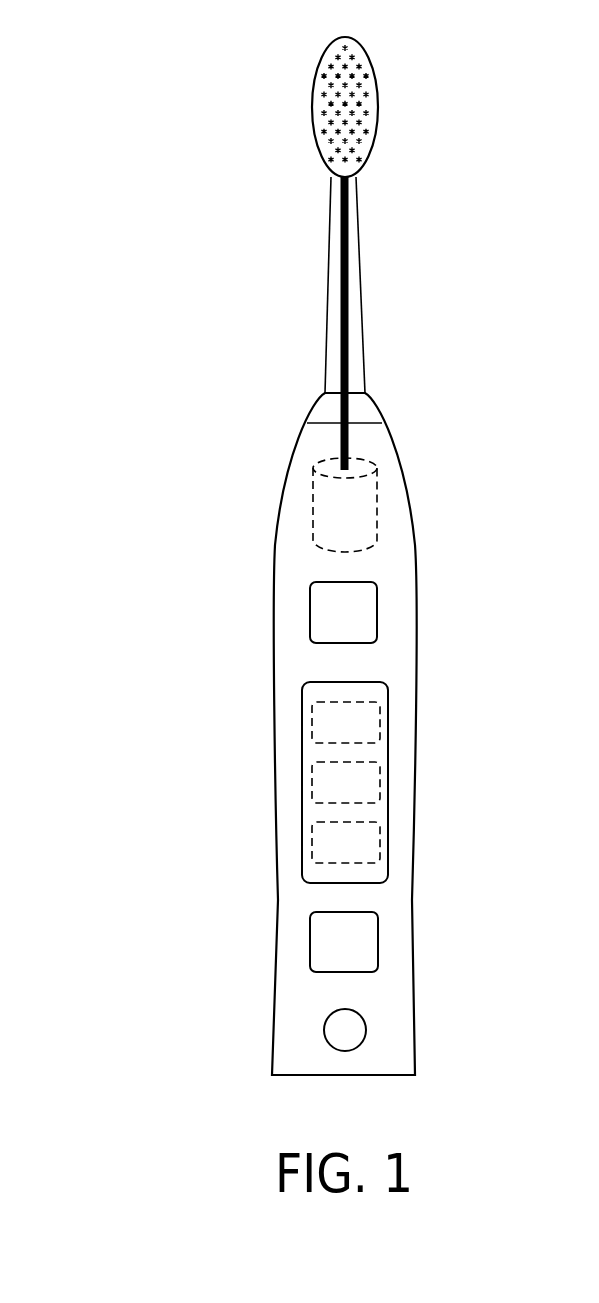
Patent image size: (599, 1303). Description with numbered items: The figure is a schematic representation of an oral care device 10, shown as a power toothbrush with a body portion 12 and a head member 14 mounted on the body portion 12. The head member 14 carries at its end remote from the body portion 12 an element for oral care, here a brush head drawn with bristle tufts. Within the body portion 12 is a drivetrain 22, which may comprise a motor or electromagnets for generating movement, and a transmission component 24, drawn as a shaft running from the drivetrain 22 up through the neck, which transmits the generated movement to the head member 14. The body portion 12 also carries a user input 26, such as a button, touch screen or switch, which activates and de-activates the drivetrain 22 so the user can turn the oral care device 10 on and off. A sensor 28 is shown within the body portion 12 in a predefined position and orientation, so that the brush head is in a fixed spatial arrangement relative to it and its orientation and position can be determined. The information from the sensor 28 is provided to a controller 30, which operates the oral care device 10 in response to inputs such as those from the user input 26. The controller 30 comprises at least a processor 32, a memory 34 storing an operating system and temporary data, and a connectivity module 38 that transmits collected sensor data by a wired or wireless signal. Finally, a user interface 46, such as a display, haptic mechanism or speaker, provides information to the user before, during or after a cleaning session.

The oral care device 10 is at (138, 97).
The body portion 12 is at (267, 603).
The head member 14 is at (292, 180).
The drivetrain 22 is at (363, 512).
The transmission component 24 is at (345, 336).
The user input 26 is at (325, 1030).
The sensor 28 is at (370, 610).
The controller 30 is at (310, 752).
The processor 32 is at (372, 720).
The memory 34 is at (372, 780).
The connectivity module 38 is at (372, 843).
The user interface 46 is at (370, 942).